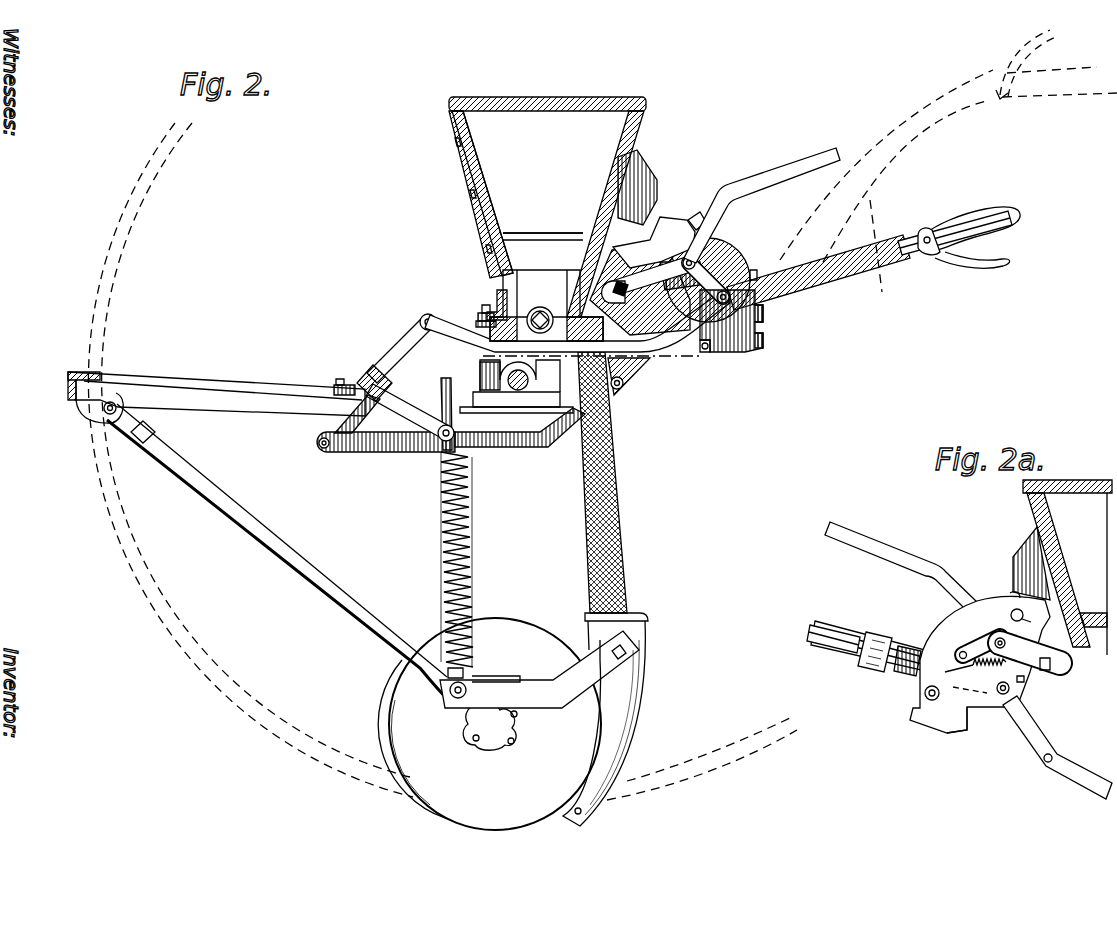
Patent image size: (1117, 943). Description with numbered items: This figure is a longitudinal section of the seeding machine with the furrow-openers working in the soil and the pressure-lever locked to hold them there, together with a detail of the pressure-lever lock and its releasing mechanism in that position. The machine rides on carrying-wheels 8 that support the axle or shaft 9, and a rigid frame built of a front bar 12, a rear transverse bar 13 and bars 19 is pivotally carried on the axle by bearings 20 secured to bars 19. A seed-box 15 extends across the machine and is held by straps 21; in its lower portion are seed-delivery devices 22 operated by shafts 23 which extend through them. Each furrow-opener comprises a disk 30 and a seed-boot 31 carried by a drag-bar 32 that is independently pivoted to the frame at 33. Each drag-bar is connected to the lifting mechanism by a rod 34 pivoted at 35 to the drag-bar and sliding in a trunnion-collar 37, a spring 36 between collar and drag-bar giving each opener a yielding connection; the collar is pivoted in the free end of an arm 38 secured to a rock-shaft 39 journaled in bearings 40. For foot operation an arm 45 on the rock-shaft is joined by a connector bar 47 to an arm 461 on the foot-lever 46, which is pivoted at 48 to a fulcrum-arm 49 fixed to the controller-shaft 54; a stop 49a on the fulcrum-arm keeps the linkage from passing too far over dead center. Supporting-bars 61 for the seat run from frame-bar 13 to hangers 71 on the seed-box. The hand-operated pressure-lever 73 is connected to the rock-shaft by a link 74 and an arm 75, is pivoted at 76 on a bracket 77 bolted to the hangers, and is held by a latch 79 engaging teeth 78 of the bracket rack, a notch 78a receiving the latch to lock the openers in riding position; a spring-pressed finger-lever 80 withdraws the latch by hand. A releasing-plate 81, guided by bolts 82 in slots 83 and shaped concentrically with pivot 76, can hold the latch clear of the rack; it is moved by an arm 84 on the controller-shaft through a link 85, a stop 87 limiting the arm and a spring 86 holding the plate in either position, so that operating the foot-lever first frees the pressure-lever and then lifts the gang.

In FIG. 2, the carrying-wheels 8 is at (176, 654).
In FIG. 2, the axle or shaft 9 is at (520, 391).
In FIG. 2, the front bar 12 is at (96, 372).
In FIG. 2, the rear transverse bar 13 is at (496, 300).
In FIG. 2, the seed-box 15 is at (648, 110).
In FIG. 2A, the seed-box 15 is at (1067, 567).
In FIG. 2, the bars 19 is at (256, 408).
In FIG. 2, the bearings 20 is at (605, 400).
In FIG. 2, the straps 21 is at (468, 178).
In FIG. 2, the seed-delivery devices 22 is at (546, 305).
In FIG. 2, the shafts 23 is at (480, 316).
In FIG. 2, the disk 30 is at (489, 724).
In FIG. 2, the seed-boot 31 is at (642, 703).
In FIG. 2, the drag-bar 32 is at (305, 585).
In FIG. 2, the drag-bar pivot 33 is at (104, 412).
In FIG. 2, the rod 34 is at (472, 556).
In FIG. 2, the rod pivot 35 is at (453, 706).
In FIG. 2, the spring 36 is at (472, 592).
In FIG. 2, the trunnion-collar 37 is at (454, 443).
In FIG. 2, the arm 38 is at (411, 440).
In FIG. 2, the rock-shaft 39 is at (374, 370).
In FIG. 2, the bearings 40 is at (346, 385).
In FIG. 2, the arm 45 is at (423, 313).
In FIG. 2, the foot-lever 46 is at (784, 170).
In FIG. 2A, the foot-lever 46 is at (918, 562).
In FIG. 2, the arm on foot-lever 461 is at (735, 278).
In FIG. 2, the connector or bar 47 is at (656, 348).
In FIG. 2, the foot-lever fulcrum 48 is at (738, 250).
In FIG. 2, the fulcrum-arm 49 is at (670, 218).
In FIG. 2, the stop 49a is at (625, 212).
In FIG. 2, the controller-shaft 54 is at (588, 243).
In FIG. 2, the supporting-bars 61 is at (874, 268).
In FIG. 2A, the supporting-bars 61 is at (848, 645).
In FIG. 2, the hangers 71 is at (727, 350).
In FIG. 2A, the hangers 71 is at (1023, 553).
In FIG. 2, the pressure-lever 73 is at (848, 277).
In FIG. 2A, the pressure-lever 73 is at (830, 648).
In FIG. 2, the link 74 is at (501, 448).
In FIG. 2, the arm 75 is at (336, 454).
In FIG. 2, the lever-pivot 76 is at (678, 330).
In FIG. 2, the bracket 77 is at (760, 322).
In FIG. 2A, the bracket 77 is at (980, 702).
In FIG. 2, the teeth 78 is at (753, 303).
In FIG. 2A, the teeth 78 is at (910, 680).
In FIG. 2, the notch 78a is at (694, 212).
In FIG. 2A, the latch 79 is at (887, 667).
In FIG. 2, the finger-lever 80 is at (946, 265).
In FIG. 2A, the releasing plate 81 is at (960, 623).
In FIG. 2A, the bolts 82 is at (930, 702).
In FIG. 2A, the guide slots 83 is at (1033, 613).
In FIG. 2A, the arm 84 is at (1030, 688).
In FIG. 2A, the link 85 is at (945, 641).
In FIG. 2A, the spring 86 is at (987, 687).
In FIG. 2A, the stop 87 is at (1033, 693).